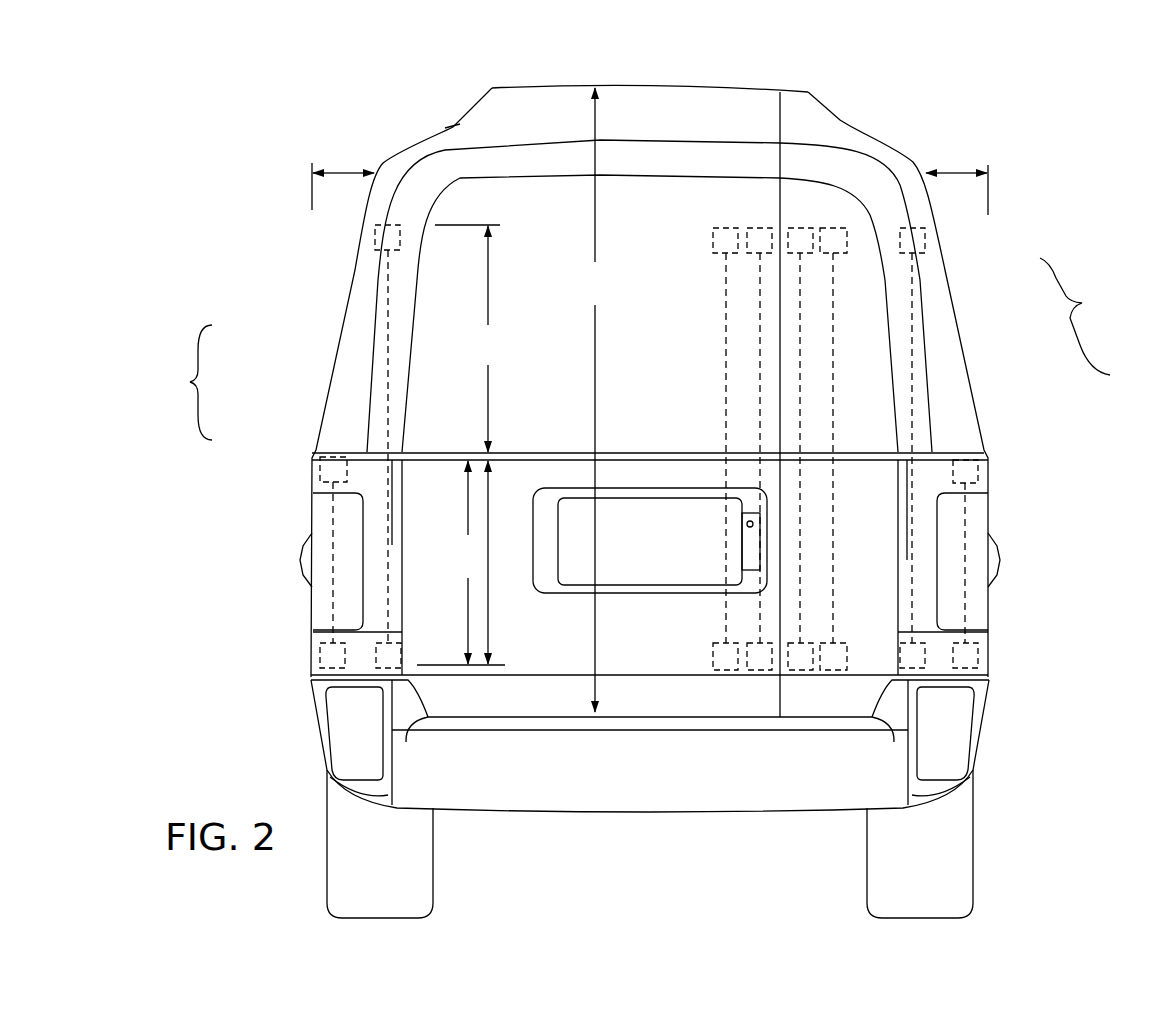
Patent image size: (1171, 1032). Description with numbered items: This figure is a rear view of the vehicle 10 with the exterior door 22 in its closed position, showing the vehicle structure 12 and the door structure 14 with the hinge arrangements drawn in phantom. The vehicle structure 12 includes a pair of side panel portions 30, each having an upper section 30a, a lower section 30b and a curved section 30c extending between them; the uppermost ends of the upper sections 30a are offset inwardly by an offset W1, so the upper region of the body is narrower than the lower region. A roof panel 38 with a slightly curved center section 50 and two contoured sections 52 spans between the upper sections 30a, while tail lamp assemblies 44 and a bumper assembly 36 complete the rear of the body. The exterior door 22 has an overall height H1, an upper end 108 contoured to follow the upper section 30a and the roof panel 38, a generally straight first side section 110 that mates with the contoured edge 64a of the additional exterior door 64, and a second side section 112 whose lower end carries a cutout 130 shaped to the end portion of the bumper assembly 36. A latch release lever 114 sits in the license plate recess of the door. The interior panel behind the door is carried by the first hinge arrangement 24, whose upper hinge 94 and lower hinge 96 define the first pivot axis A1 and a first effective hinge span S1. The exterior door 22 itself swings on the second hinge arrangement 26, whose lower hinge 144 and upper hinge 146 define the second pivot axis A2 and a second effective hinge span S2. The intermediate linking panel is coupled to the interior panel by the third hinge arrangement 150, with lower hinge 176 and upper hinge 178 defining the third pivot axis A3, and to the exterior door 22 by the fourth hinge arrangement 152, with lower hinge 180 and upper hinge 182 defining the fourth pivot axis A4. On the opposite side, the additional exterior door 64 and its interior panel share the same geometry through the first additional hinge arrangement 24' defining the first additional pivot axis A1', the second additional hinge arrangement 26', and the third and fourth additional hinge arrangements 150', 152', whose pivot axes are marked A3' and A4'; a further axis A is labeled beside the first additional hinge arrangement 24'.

The vehicle 10 is at (292, 147).
The vehicle structure 12 is at (733, 70).
The door structure 14 is at (962, 235).
The exterior door 22 is at (535, 655).
The first hinge arrangement 24 is at (321, 228).
The first additional hinge arrangement 24' is at (956, 298).
The second hinge arrangement 26 is at (287, 651).
The second additional hinge arrangement 26' is at (997, 551).
The side panel portion 30 is at (633, 349).
The upper section 30a is at (357, 253).
The lower section 30b is at (312, 470).
The curved section 30c is at (327, 405).
The bumper assembly 36 is at (682, 775).
The roof panel 38 is at (673, 85).
The tail lamp assembly 44 is at (323, 603).
The center section 50 is at (560, 85).
The contoured section 52 is at (450, 125).
The additional exterior door 64 is at (872, 568).
The contoured edge 64a is at (779, 424).
The upper hinge 94 is at (400, 232).
The lower hinge 96 is at (400, 650).
The upper end 108 is at (507, 88).
The first side section 110 is at (782, 204).
The second side section 112 is at (312, 497).
The latch release lever 114 is at (752, 548).
The cutout 130 is at (406, 742).
The lower hinge 144 is at (312, 660).
The upper hinge 146 is at (347, 470).
The third hinge arrangement 150 is at (713, 218).
The third additional hinge arrangement 150' is at (838, 435).
The fourth hinge arrangement 152 is at (676, 234).
The fourth additional hinge arrangement 152' is at (854, 435).
The lower hinge 176 is at (758, 668).
The upper hinge 178 is at (760, 228).
The lower hinge 180 is at (712, 655).
The upper hinge 182 is at (713, 253).
The axis A is at (912, 403).
The first pivot axis A1 is at (421, 446).
The first additional pivot axis A1' is at (876, 618).
The second pivot axis A2 is at (337, 512).
The third pivot axis A3 is at (719, 448).
The axis 3 (right) A3' is at (844, 493).
The fourth pivot axis A4 is at (684, 448).
The axis 4 (right) A4' is at (861, 542).
The overall height H1 is at (583, 400).
The first effective hinge span S1 is at (467, 338).
The second effective hinge span S2 is at (461, 563).
The offset W1 is at (650, 177).